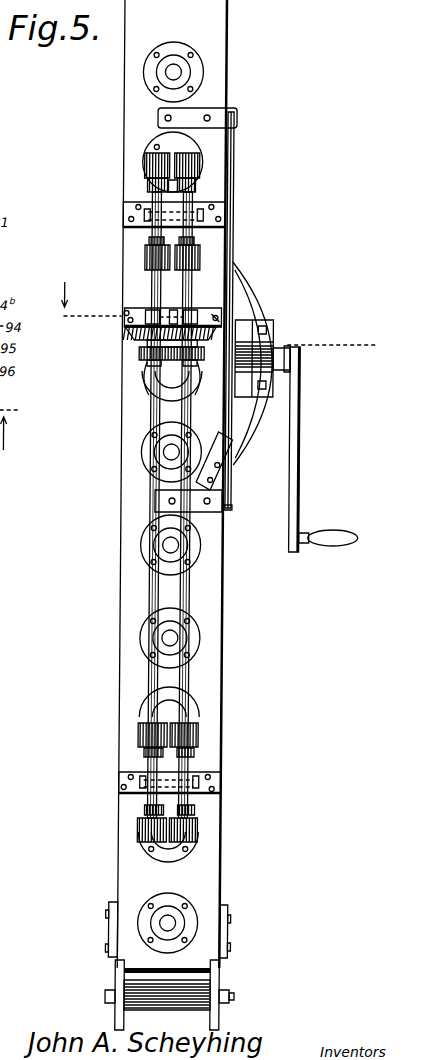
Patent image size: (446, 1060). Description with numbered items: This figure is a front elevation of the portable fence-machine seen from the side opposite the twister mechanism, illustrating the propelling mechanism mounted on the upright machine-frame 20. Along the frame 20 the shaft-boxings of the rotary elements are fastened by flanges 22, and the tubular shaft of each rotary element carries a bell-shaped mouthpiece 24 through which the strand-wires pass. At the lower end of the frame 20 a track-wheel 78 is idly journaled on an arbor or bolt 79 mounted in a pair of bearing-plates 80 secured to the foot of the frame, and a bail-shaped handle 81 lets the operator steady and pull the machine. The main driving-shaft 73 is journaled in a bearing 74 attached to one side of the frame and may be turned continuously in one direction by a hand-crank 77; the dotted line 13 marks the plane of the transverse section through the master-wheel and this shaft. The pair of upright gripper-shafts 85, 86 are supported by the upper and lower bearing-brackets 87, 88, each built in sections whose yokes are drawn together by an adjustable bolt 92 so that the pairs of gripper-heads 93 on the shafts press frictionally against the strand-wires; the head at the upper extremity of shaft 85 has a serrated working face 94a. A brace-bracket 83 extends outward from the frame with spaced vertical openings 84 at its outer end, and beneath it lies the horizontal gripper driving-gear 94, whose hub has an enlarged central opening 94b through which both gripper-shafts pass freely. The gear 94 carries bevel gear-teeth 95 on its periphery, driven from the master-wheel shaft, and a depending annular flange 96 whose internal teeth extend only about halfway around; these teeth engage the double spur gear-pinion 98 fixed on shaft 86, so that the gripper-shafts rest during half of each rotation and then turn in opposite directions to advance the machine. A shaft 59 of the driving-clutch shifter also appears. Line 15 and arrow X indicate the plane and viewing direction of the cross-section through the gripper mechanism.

The machine-frame 20 is at (128, 528).
The flange 22 is at (199, 72).
The bell-shaped mouthpiece 24 is at (171, 65).
The handle 81 is at (236, 137).
The gripper-heads 93 is at (202, 170).
The serrated working face 94a is at (146, 168).
The adjustable bolt 92 is at (149, 218).
The upper bearing-bracket 87 is at (203, 235).
The brace-bracket 83 is at (230, 304).
The shaft 59 is at (127, 316).
The enlarged central opening 94b is at (204, 301).
The spaced vertical openings 84 is at (179, 310).
The gripper driving-gear 94 is at (128, 327).
The bevel gear-teeth 95 is at (131, 334).
The depending annular flange 96 is at (143, 352).
The double spur gear-pinion 98 is at (197, 362).
The section line 13 is at (220, 317).
The main driving-shaft 73 is at (292, 348).
The bearing 74 is at (247, 396).
The hand-crank 77 is at (304, 436).
The gripper-shaft 85 is at (156, 588).
The gripper-shaft 86 is at (196, 601).
The lower bearing-bracket 88 is at (193, 804).
The bearing-plates 80 is at (116, 926).
The track-wheel 78 is at (130, 996).
The arbor or bolt 79 is at (240, 1003).
The section line 15 is at (19, 409).
The arrow X is at (5, 440).